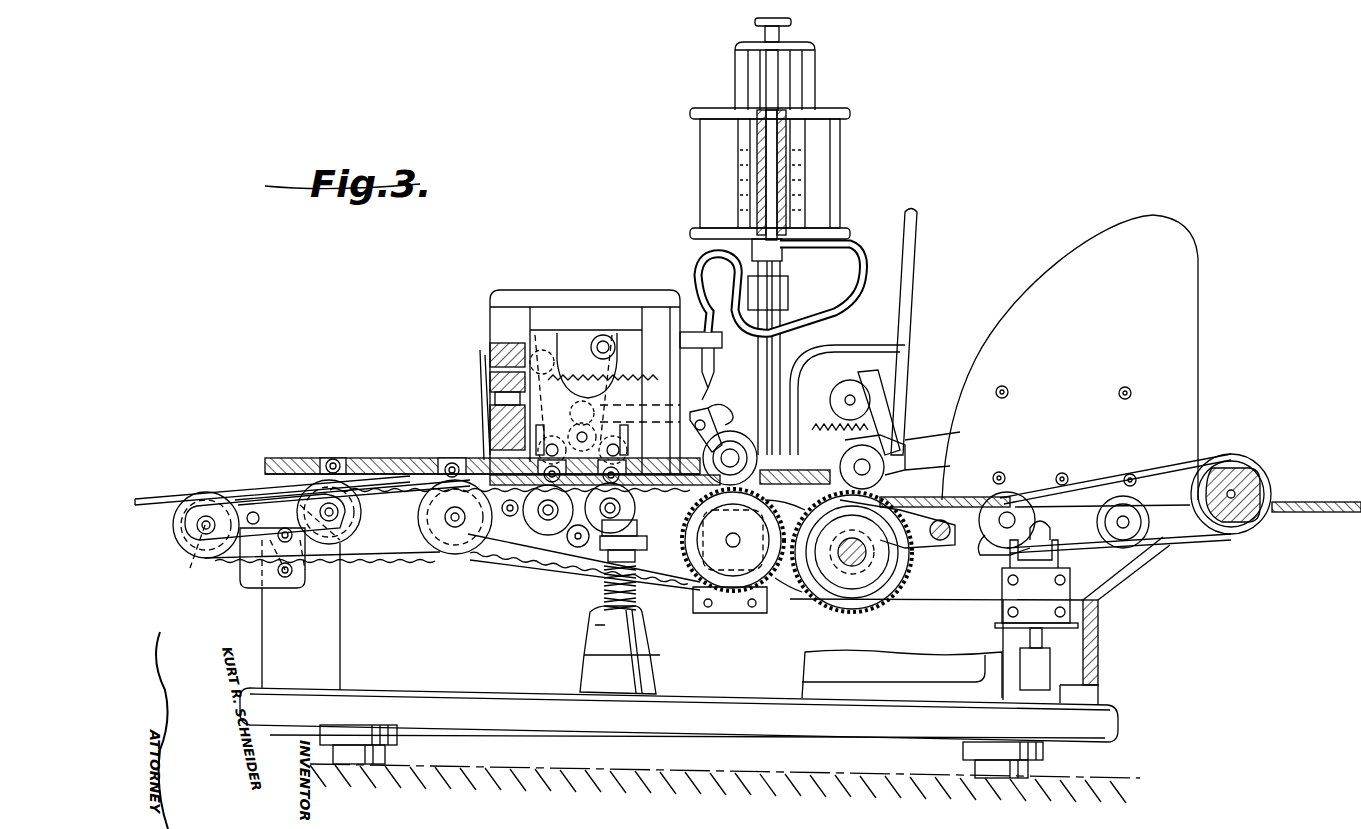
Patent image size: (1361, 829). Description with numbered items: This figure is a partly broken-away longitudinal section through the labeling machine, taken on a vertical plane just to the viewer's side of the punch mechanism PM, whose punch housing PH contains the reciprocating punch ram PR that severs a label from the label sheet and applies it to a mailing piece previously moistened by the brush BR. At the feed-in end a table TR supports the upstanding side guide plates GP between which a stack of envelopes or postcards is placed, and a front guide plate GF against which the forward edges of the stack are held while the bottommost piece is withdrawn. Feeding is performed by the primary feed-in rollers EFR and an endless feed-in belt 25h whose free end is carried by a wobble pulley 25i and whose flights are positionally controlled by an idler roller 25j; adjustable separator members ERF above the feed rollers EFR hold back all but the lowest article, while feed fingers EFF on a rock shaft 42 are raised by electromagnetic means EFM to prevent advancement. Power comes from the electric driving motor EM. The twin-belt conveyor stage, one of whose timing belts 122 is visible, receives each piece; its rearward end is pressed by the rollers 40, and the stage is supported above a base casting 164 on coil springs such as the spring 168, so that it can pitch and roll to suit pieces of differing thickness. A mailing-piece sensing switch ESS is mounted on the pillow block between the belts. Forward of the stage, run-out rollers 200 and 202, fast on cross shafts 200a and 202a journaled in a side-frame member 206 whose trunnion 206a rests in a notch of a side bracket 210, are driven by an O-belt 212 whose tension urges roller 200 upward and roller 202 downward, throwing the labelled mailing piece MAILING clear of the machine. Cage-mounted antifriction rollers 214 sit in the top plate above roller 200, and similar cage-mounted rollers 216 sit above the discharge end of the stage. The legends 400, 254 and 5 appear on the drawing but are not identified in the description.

The electric driving motor EM is at (852, 165).
The punch mechanism PM is at (515, 292).
The punch ram PR is at (548, 340).
The punch housing PH is at (500, 312).
The brush BR is at (700, 455).
The front guide plate GF is at (910, 268).
The side guide plates GP is at (1108, 322).
The rollers 40 is at (728, 440).
The roller 400 is at (778, 458).
The separator members ERF is at (951, 427).
The feed fingers EFF is at (947, 461).
The pulley 254 is at (1012, 505).
The idler roller 25j is at (1130, 495).
The table TR is at (1293, 501).
The feed-in belt 25h is at (1190, 540).
The wobble pulley 25i is at (1245, 520).
The rock shaft 42 is at (940, 545).
The electromagnetic means EFM is at (1062, 593).
The primary feed-in rollers EFR is at (840, 612).
The mailing-piece sensing switch ESS is at (768, 622).
The coil spring 168 is at (603, 590).
The base casting 164 is at (582, 672).
The idler 5 is at (575, 548).
The timing belt 122 is at (528, 555).
The O-belt 212 is at (470, 575).
The run-out roller 200 is at (352, 520).
The cross shaft 200a is at (355, 535).
The run-out roller 202 is at (193, 545).
The cross shaft 202a is at (225, 560).
The side-frame member 206 is at (292, 505).
The trunnion 206a is at (265, 583).
The side bracket 210 is at (268, 592).
The antifriction rollers 214 is at (340, 462).
The cage-mounted rollers 216 is at (452, 460).
The labelled mailing piece MAILING is at (158, 494).